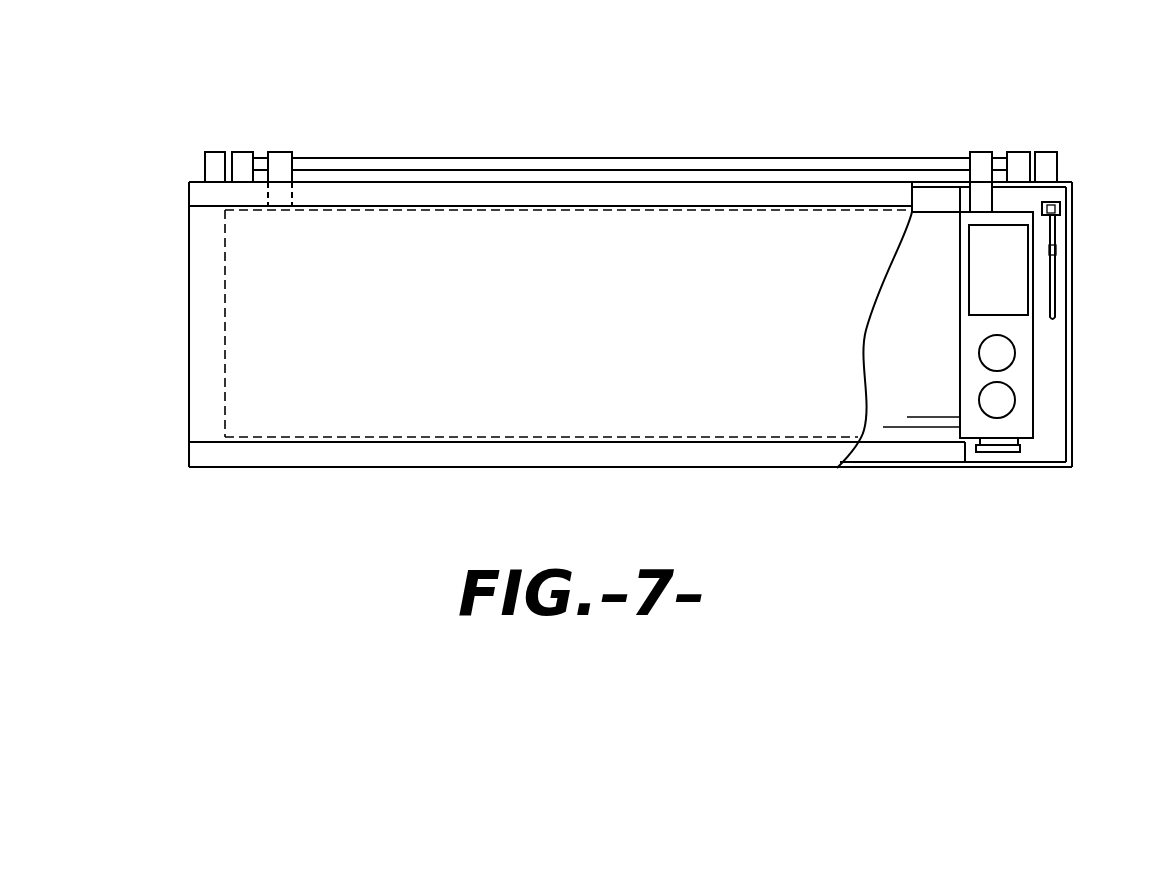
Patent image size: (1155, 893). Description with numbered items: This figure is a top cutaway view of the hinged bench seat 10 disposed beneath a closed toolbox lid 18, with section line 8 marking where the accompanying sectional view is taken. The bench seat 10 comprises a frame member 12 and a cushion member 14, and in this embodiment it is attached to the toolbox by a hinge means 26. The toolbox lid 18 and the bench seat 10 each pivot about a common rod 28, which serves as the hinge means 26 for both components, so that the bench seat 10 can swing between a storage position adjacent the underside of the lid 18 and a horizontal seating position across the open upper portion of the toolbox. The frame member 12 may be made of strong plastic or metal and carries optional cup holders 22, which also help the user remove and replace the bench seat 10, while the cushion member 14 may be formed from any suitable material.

The section line 8- 8 is at (185, 98).
The bench seat 10 is at (901, 390).
The frame member 12 is at (1022, 422).
The cushion member 14 is at (928, 233).
The hinged lid 18 is at (207, 290).
The cup holders 22 is at (1000, 403).
The hinge means 26 is at (280, 163).
The common rod 28 is at (545, 158).